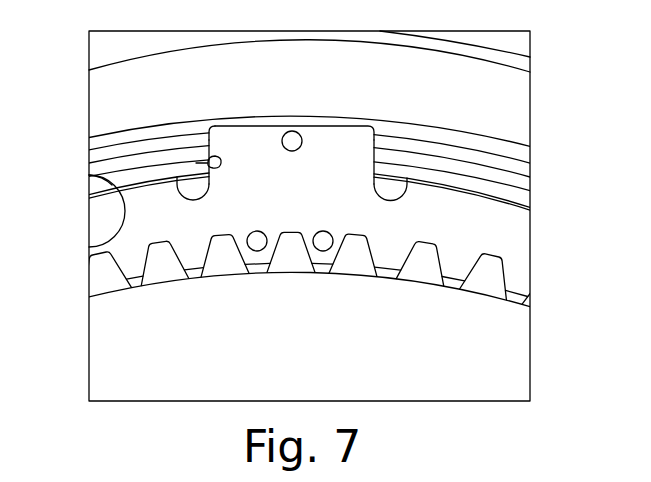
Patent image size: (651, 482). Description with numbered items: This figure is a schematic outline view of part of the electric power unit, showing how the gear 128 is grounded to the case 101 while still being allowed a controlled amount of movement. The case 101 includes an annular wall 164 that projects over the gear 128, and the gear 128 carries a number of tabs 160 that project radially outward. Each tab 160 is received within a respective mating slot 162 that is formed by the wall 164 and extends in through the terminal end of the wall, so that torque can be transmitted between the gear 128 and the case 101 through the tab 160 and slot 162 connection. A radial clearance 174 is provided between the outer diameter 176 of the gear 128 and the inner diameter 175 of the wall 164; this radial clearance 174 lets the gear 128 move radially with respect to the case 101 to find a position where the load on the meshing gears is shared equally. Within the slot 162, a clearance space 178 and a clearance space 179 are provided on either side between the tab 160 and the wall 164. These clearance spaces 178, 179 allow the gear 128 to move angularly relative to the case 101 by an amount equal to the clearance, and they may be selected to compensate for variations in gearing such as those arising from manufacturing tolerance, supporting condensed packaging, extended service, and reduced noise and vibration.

The case 101 is at (508, 100).
The gear 128 is at (518, 247).
The tab 160 is at (258, 137).
The slot 162 is at (196, 163).
The annular wall 164 is at (410, 138).
The radial clearance 174 is at (309, 191).
The inner diameter 175 is at (90, 247).
The outer diameter 176 is at (98, 176).
The clearance space 178 is at (209, 127).
The clearance space 179 is at (376, 130).